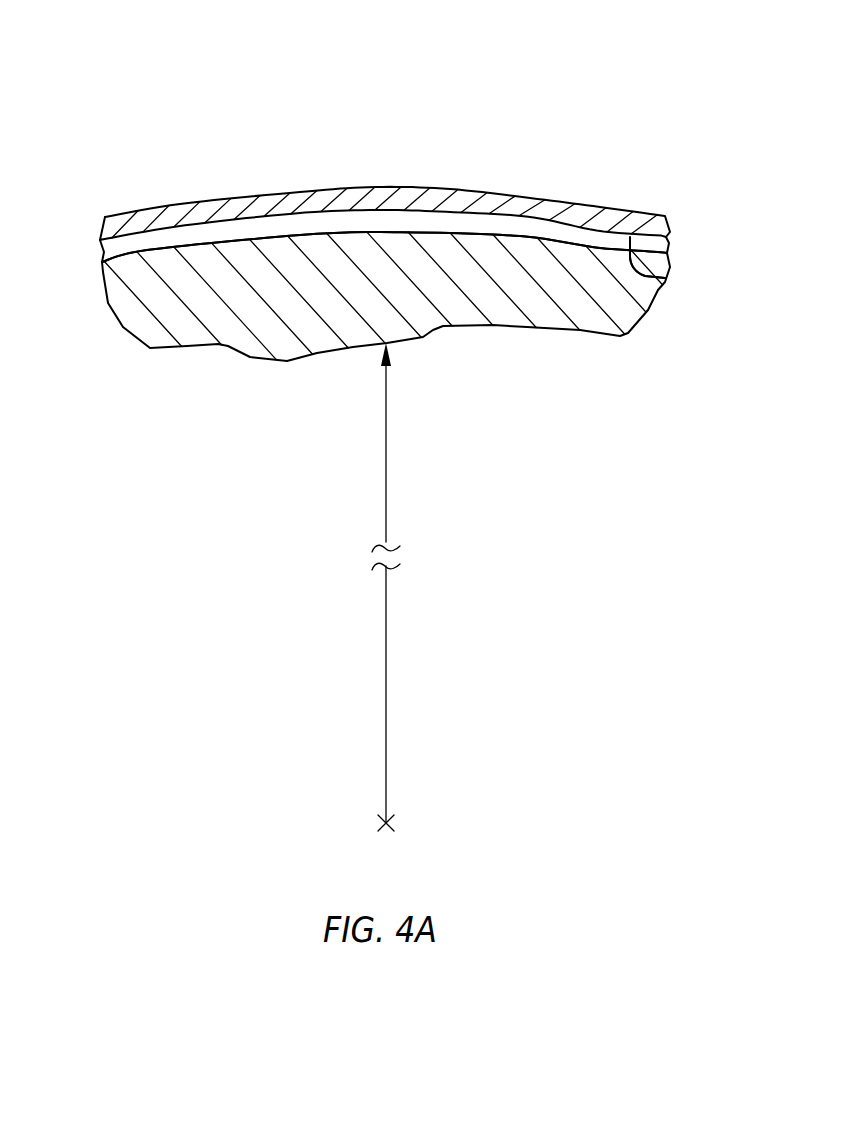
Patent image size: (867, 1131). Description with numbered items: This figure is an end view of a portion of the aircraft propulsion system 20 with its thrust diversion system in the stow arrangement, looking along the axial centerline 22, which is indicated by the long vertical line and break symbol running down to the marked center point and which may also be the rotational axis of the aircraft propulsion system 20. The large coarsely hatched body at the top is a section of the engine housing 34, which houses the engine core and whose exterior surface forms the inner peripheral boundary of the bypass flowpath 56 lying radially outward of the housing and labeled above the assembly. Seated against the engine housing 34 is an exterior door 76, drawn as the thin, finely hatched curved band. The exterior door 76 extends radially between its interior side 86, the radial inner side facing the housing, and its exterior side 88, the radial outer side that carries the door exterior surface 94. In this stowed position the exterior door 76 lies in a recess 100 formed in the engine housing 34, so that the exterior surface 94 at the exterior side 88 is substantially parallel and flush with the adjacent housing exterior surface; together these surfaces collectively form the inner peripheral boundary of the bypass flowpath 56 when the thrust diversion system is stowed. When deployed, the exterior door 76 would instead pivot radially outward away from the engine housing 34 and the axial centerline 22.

The aircraft propulsion system 20 is at (153, 85).
The axial centerline 22 is at (393, 822).
The engine housing 34 is at (110, 318).
The bypass flowpath 56 is at (348, 119).
The exterior door 76 is at (532, 178).
The interior side 86 is at (665, 278).
The exterior side 88 is at (622, 208).
The exterior surface 94 is at (622, 208).
The recess 100 is at (162, 230).